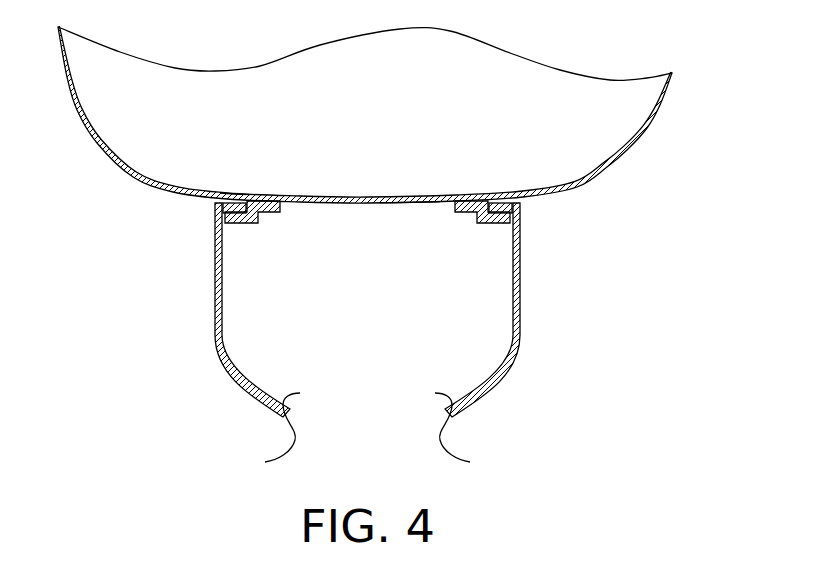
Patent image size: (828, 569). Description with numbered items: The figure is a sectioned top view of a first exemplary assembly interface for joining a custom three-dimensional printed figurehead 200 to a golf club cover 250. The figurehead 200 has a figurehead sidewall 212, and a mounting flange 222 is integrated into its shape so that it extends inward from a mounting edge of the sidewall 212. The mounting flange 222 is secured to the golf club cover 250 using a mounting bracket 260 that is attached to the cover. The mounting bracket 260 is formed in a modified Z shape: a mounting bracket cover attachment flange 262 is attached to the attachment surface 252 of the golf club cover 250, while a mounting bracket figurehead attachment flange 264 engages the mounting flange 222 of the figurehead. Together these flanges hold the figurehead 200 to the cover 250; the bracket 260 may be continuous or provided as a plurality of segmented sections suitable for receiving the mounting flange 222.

The custom three-dimensional printed figurehead 200 is at (164, 438).
The figurehead sidewall 212 is at (214, 284).
The mounting flange 222 is at (233, 197).
The golf club cover 250 is at (627, 163).
The attachment surface 252 is at (403, 203).
The mounting bracket 260 is at (284, 221).
The mounting bracket cover attachment flange 262 is at (270, 213).
The mounting bracket figurehead attachment flange 264 is at (245, 224).